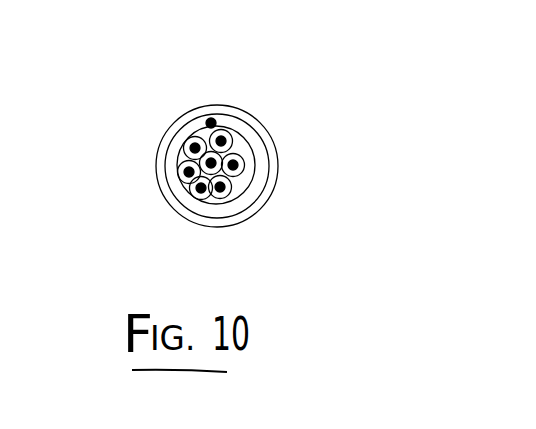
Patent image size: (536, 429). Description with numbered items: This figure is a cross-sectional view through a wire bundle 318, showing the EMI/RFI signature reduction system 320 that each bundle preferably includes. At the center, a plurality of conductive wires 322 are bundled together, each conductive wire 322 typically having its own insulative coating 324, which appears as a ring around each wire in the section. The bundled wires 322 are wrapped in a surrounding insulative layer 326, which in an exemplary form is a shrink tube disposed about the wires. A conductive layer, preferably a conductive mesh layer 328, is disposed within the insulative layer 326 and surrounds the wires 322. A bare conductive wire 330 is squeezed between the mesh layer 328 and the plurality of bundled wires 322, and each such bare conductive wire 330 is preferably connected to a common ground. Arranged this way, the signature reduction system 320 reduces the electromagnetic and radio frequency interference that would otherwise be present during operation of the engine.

The wire bundle 318 is at (147, 139).
The EMI/RFI signature reduction system 320 is at (277, 183).
The conductive wires 322 is at (237, 139).
The insulative coating 324 is at (228, 131).
The insulative layer 326 is at (251, 213).
The conductive mesh layer 328 is at (228, 224).
The bare conductive wire 330 is at (209, 120).